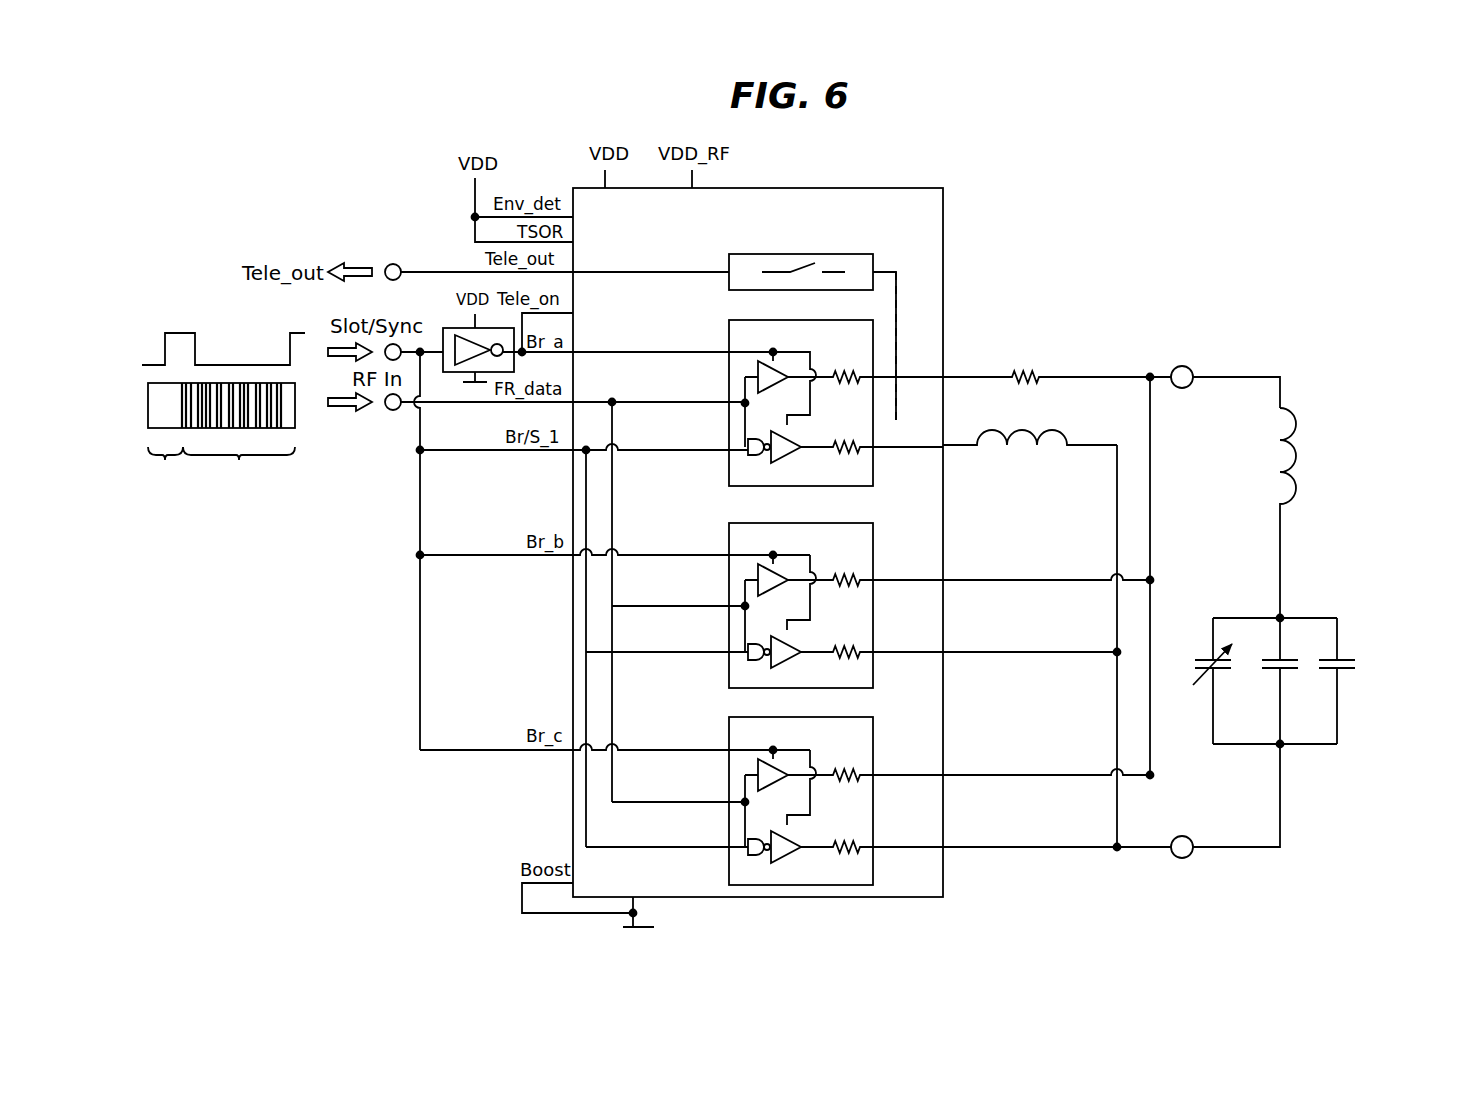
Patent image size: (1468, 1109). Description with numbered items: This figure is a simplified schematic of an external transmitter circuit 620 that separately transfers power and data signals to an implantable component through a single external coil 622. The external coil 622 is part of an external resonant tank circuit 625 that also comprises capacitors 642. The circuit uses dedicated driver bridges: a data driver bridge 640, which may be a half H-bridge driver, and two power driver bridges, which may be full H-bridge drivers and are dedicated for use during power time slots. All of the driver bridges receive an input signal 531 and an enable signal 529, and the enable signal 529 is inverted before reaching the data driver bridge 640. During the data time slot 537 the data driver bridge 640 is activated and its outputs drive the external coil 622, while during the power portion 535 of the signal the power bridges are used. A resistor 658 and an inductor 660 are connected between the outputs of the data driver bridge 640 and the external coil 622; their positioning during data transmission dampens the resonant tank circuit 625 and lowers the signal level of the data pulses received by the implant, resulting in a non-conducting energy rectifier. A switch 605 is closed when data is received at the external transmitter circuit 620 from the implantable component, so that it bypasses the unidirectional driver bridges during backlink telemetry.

The external transmitter circuit 620 is at (1040, 125).
The switch 605 is at (862, 254).
The data driver bridge 640 is at (862, 321).
The resistor 658 is at (1052, 341).
The inductor 660 is at (1070, 465).
The external resonant tank circuit 625 is at (1201, 586).
The external coil 622 is at (1313, 442).
The capacitors 642 is at (1380, 635).
The enable signal 529 is at (193, 291).
The input signal 531 is at (133, 382).
The power portion of signal 535 is at (177, 347).
The data time slot 537 is at (237, 347).